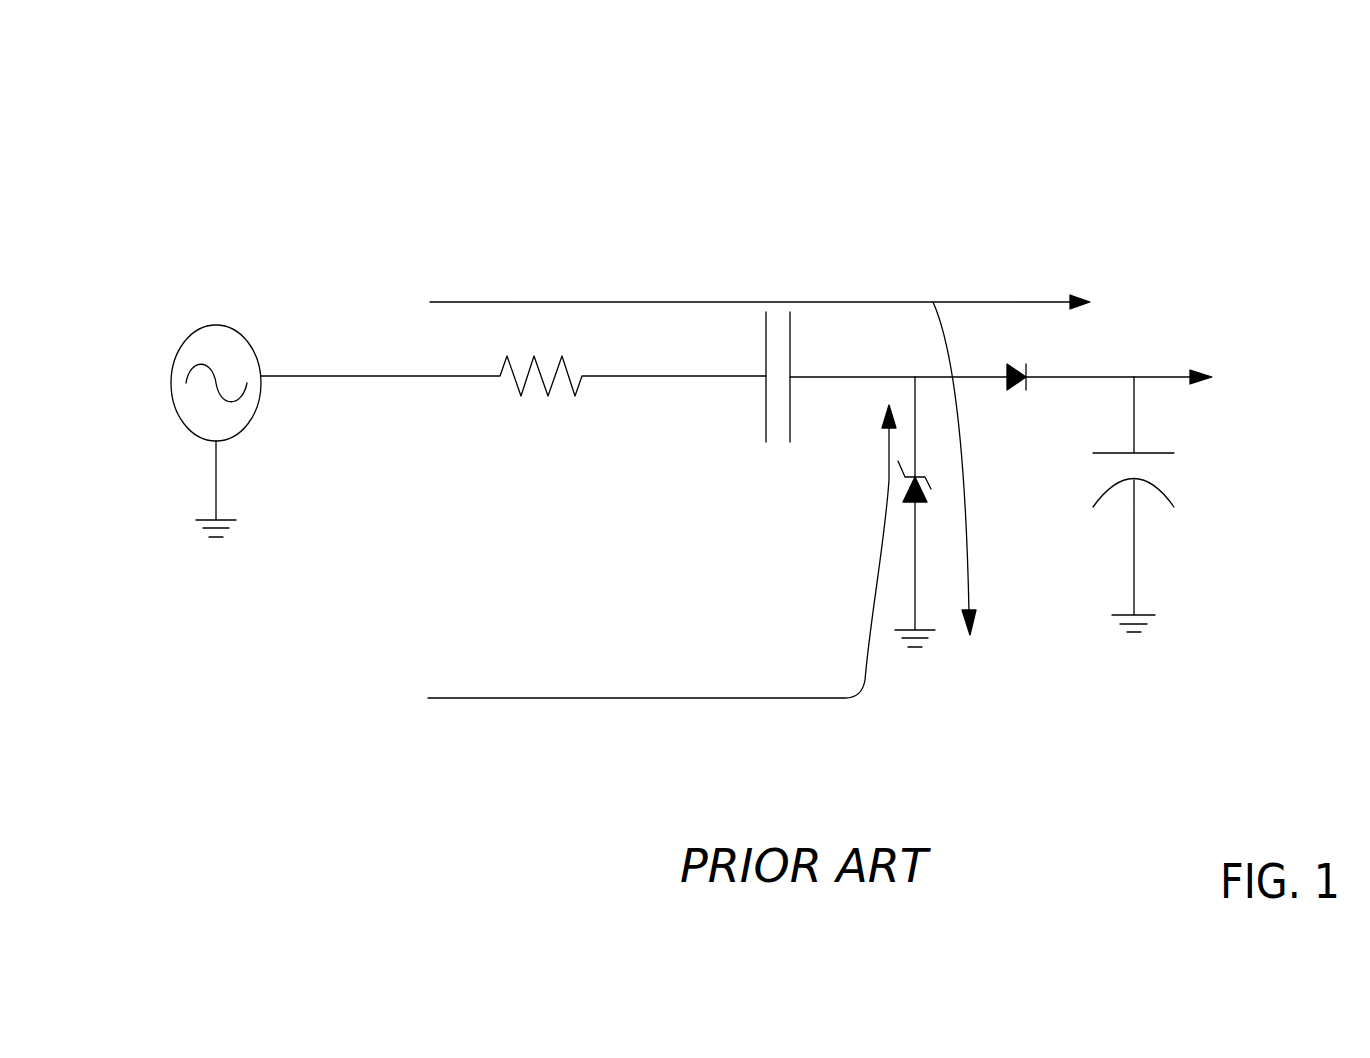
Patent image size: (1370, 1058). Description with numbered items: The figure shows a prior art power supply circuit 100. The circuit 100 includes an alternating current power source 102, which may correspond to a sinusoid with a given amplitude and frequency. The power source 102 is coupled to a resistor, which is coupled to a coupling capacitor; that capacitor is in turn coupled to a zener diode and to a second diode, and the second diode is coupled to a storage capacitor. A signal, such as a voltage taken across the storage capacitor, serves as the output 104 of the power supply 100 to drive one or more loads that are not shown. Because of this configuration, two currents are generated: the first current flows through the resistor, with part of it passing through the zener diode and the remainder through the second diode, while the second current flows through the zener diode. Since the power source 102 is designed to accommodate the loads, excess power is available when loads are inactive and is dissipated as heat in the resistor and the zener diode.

The power supply circuit 100 is at (730, 140).
The alternating current power source 102 is at (214, 323).
The output 104 is at (1172, 401).